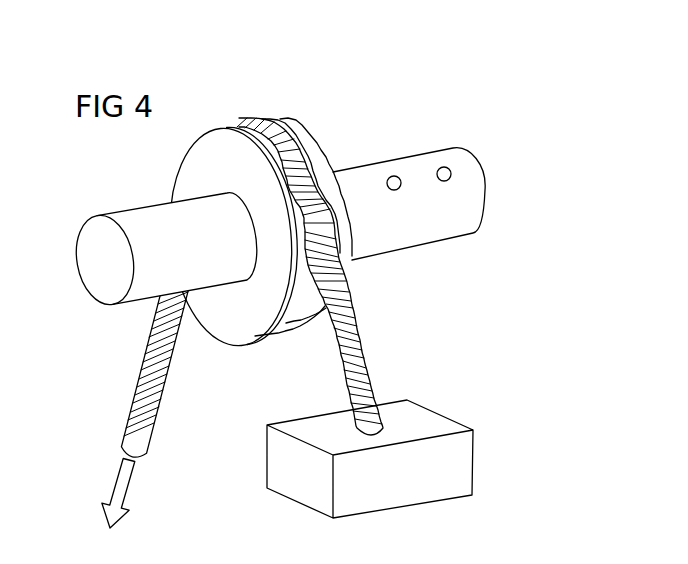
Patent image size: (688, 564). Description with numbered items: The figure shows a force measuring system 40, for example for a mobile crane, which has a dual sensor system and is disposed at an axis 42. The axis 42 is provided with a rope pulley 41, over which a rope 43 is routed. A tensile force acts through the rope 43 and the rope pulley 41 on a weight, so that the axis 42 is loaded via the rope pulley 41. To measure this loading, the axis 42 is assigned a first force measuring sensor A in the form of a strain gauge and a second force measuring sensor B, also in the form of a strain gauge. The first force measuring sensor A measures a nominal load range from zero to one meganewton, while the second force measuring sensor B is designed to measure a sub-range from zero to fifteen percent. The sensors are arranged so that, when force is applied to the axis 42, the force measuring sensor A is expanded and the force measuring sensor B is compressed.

The force measuring system 40 is at (278, 267).
The rope pulley 41 is at (215, 318).
The axis 42 is at (157, 233).
The rope 43 is at (358, 328).
The first force measuring sensor A is at (392, 176).
The second force measuring sensor B is at (442, 167).